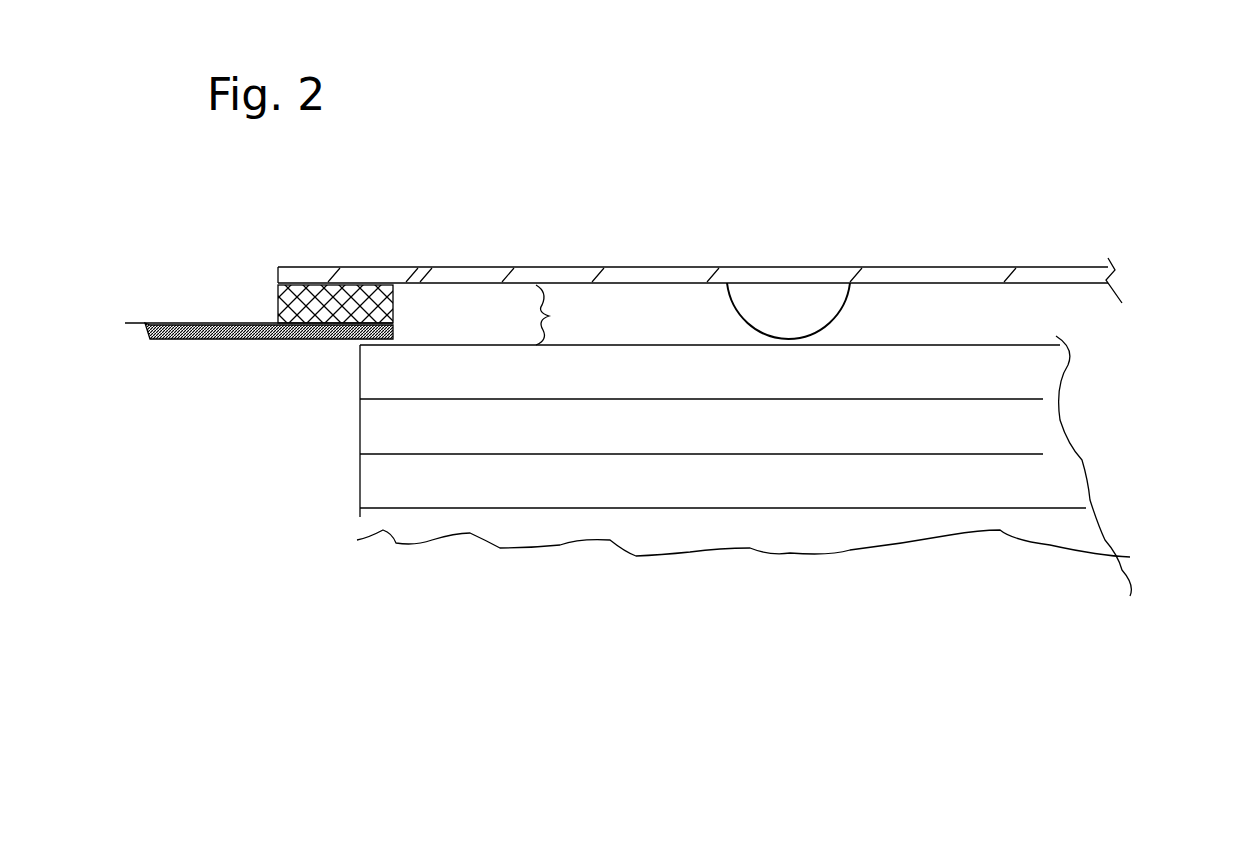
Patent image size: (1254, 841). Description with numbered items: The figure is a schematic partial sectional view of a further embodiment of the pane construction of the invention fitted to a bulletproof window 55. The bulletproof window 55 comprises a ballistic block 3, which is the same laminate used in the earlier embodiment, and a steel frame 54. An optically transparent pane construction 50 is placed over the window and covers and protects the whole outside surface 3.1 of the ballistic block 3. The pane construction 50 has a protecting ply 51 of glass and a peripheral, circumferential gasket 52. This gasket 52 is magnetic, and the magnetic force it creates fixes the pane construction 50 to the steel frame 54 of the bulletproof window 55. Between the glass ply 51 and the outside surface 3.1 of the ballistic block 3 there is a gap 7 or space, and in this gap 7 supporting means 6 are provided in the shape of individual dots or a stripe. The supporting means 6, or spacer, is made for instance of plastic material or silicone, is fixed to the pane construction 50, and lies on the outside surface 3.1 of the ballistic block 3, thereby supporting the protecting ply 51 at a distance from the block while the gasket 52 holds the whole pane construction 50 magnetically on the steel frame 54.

The ballistic block 3 is at (840, 528).
The outside surface 3.1 is at (1040, 340).
The supporting means 6 is at (763, 300).
The gap 7 is at (559, 315).
The pane construction 50 is at (292, 267).
The protecting ply 51 is at (425, 268).
The gasket 52 is at (278, 292).
The steel frame 54 is at (200, 348).
The bulletproof window 55 is at (372, 567).